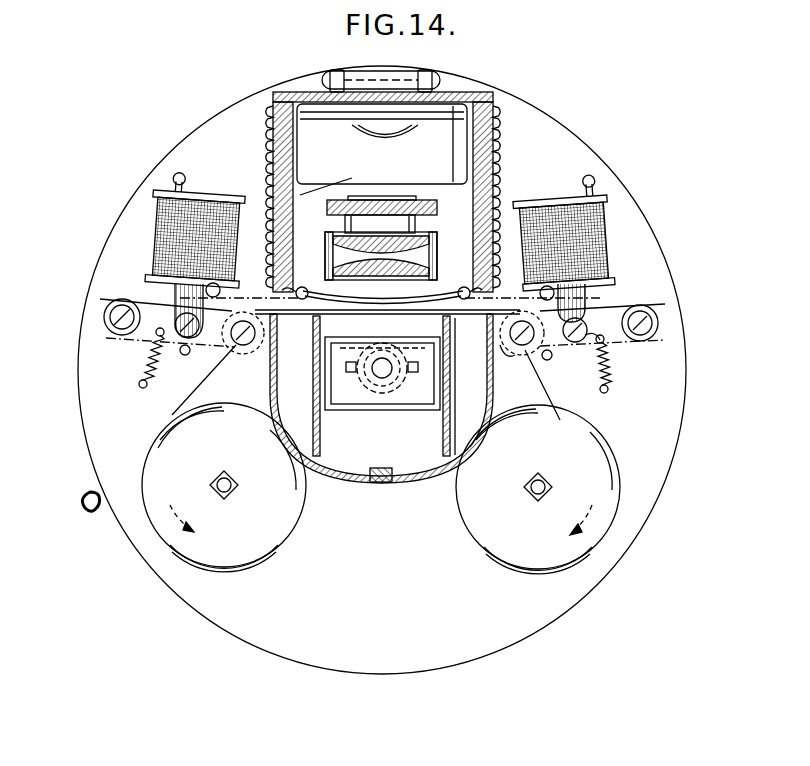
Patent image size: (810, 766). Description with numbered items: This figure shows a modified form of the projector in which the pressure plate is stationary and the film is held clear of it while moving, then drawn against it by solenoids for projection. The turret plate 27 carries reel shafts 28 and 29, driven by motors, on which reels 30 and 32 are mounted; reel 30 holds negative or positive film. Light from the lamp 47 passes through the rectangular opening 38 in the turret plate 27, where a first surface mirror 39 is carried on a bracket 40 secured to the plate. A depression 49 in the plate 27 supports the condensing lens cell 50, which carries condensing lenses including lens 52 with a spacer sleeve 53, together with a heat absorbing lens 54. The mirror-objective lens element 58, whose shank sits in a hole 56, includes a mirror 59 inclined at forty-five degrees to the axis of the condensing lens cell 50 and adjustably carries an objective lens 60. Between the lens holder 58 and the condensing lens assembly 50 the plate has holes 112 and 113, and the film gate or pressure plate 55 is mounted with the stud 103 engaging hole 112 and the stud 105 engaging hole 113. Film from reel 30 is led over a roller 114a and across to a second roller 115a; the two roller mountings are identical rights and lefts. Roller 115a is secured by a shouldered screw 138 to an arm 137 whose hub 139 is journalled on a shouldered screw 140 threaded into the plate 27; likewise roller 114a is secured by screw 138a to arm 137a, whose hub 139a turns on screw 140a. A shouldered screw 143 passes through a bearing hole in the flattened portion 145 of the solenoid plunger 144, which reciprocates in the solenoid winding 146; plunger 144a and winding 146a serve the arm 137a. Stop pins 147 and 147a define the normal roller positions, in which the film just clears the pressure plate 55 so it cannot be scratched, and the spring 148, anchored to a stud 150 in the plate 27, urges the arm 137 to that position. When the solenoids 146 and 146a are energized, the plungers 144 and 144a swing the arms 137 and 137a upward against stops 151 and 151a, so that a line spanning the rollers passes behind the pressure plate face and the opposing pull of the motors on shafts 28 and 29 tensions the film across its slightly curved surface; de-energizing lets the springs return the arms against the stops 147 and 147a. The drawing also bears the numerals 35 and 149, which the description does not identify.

The turret plate 27 is at (625, 250).
The lamp housing 35 is at (490, 118).
The first surface mirror 39 is at (322, 125).
The lamp 47 is at (396, 134).
The bracket 40 is at (455, 132).
The rectangular opening 38 is at (320, 196).
The heat absorbing lens 54 is at (390, 210).
The depression 49 is at (380, 224).
The condensing lens cell 50 is at (436, 258).
The spacer sleeve 53 is at (340, 246).
The condensing lens 52 is at (340, 268).
The film gate or pressure plate 55 is at (383, 290).
The stud 103 is at (295, 280).
The stud 105 is at (470, 290).
The hole 112 is at (381, 380).
The hole 113 is at (449, 366).
The mirror-objective lens element 58 is at (441, 395).
The hole 56 is at (382, 405).
The mirror 59 is at (402, 402).
The objective lens 60 is at (364, 406).
The solenoid winding 146a is at (205, 212).
The solenoid winding 146 is at (545, 215).
The solenoid plunger 144a is at (176, 292).
The solenoid plunger 144 is at (588, 297).
The stop 151a is at (237, 288).
The stop 151 is at (540, 295).
The arm 137a is at (102, 297).
The arm 137 is at (645, 303).
The boss or hub 139a is at (105, 318).
The boss or hub 139 is at (660, 320).
The shouldered screw 140a is at (112, 328).
The shouldered screw 140 is at (654, 332).
The roller 114a is at (240, 346).
The roller 115a is at (530, 348).
The shouldered screw 138a is at (225, 340).
The shouldered screw 138 is at (504, 359).
The shouldered screw 143 is at (558, 324).
The flattened portion 145 is at (600, 337).
The stop pin or boss 147a is at (184, 356).
The stop pin or boss 147 is at (548, 360).
The right spring 149 is at (605, 352).
The spring 148 is at (600, 388).
The stud 150 is at (610, 392).
The reel 30 is at (150, 458).
The reel 32 is at (612, 452).
The reel shaft 28 is at (232, 492).
The reel shaft 29 is at (552, 487).